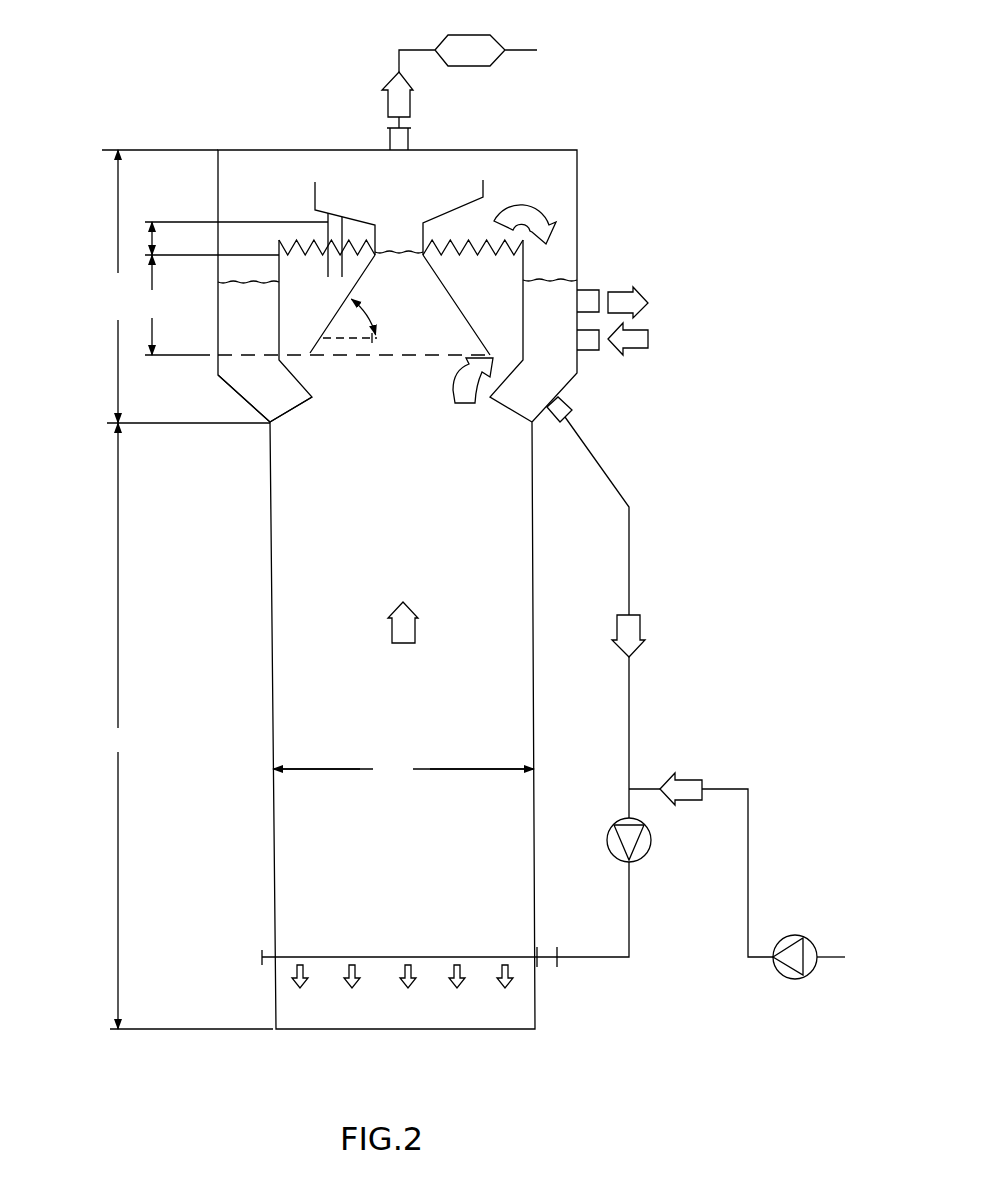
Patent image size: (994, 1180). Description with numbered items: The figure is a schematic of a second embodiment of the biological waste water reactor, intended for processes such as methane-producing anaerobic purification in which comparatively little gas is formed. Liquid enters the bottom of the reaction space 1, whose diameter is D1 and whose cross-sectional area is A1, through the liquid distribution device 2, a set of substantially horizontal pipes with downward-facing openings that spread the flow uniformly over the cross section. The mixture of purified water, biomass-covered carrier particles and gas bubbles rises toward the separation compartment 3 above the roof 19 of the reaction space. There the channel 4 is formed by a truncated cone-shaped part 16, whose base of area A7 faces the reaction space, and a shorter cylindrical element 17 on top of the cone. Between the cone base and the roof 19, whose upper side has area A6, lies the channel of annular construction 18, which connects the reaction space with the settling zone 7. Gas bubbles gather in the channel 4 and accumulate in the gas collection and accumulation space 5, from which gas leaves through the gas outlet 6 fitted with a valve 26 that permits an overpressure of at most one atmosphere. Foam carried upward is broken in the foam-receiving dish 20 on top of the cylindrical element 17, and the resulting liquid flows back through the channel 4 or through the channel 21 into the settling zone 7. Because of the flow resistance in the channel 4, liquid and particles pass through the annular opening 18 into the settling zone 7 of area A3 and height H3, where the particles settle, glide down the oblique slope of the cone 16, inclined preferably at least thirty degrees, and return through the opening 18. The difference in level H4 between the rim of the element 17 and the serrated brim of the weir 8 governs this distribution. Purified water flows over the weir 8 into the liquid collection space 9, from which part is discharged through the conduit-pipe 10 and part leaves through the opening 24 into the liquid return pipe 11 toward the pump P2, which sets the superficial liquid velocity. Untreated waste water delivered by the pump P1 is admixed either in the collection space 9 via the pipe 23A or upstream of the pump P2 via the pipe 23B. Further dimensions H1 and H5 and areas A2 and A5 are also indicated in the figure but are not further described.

The reaction space 1 is at (403, 593).
The liquid distribution device 2 is at (428, 951).
The separation compartment 3 is at (579, 195).
The central channel 4 is at (399, 269).
The gas collection and accumulation space 5 is at (395, 173).
The gas outlet 6 is at (411, 140).
The settling zone 7 is at (477, 331).
The weir 8 is at (557, 257).
The liquid collection space 9 is at (550, 307).
The discharge conduit-pipe 10 is at (588, 288).
The liquid return pipe 11 is at (631, 551).
The truncated cone-shaped part 16 is at (466, 322).
The cylindrical element 17 is at (425, 233).
The channel of annular construction 18 is at (298, 360).
The roof of the reaction space 19 is at (293, 411).
The foam-receiving dish 20 is at (487, 193).
The channel 21 is at (317, 212).
The conduit-pipe 23A is at (589, 358).
The pipe 23B is at (646, 787).
The opening 24 is at (564, 399).
The valve 26 is at (476, 45).
The cross sectional area of the reaction space A1 is at (403, 694).
The flow area 2 A2 is at (395, 238).
The cross sectional area of the settling zone A3 is at (463, 231).
The flow area 5 A5 is at (343, 195).
The cross sectional area of the roof upperside A6 is at (429, 380).
The area of the base of the truncated cone A7 is at (354, 356).
The pump P1 is at (809, 949).
The pump P2 is at (611, 887).
The diameter of the reaction space D1 is at (403, 770).
The height H1 is at (188, 726).
The height of the settling zone H3 is at (177, 305).
The difference in level H4 is at (224, 238).
The height H5 is at (182, 286).